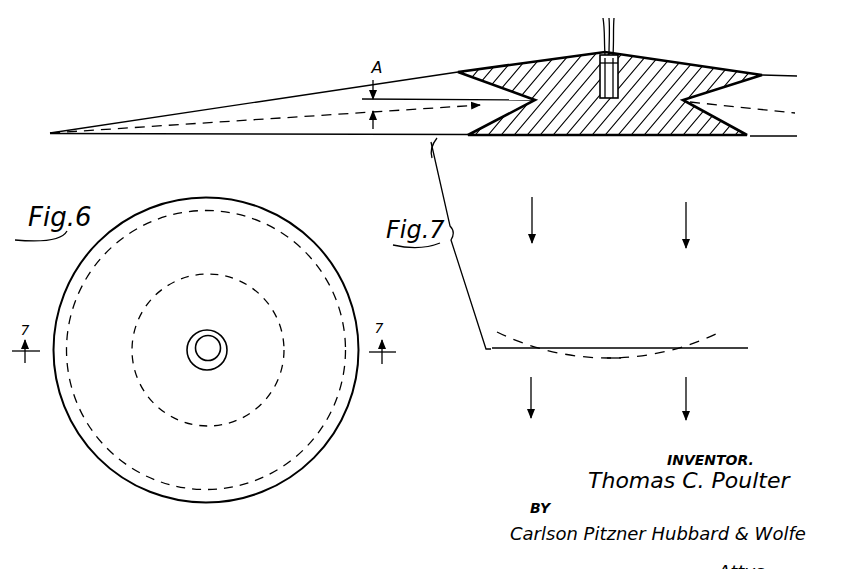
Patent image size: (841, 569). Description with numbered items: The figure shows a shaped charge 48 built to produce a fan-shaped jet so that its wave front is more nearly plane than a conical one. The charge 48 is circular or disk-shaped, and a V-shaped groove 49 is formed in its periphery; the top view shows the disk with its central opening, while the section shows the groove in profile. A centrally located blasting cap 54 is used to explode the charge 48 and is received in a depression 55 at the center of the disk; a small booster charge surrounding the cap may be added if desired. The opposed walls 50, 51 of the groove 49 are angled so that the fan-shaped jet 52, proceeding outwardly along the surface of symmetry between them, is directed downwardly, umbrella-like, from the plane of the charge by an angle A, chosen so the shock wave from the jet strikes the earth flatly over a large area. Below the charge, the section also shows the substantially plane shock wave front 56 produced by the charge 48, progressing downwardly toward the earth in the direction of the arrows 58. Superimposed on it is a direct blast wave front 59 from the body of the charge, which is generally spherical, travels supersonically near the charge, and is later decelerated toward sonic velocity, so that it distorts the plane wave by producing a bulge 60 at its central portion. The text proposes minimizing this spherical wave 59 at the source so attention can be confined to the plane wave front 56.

In FIG. 6, the shaped charge 48 is at (287, 482).
In FIG. 7, the shaped charge 48 is at (706, 64).
In FIG. 7, the V-shaped groove 49 is at (479, 107).
In FIG. 7, the groove wall 50 is at (463, 76).
In FIG. 7, the groove wall 51 is at (467, 134).
In FIG. 7, the fan-shaped jet 52 is at (413, 103).
In FIG. 7, the blasting cap 54 is at (601, 72).
In FIG. 6, the depression 55 is at (214, 357).
In FIG. 7, the depression 55 is at (617, 55).
In FIG. 7, the shock wave front 56 is at (513, 350).
In FIG. 7, the arrows 58 is at (689, 216).
In FIG. 7, the direct blast wave front 59 is at (701, 340).
In FIG. 7, the bulge 60 is at (614, 359).